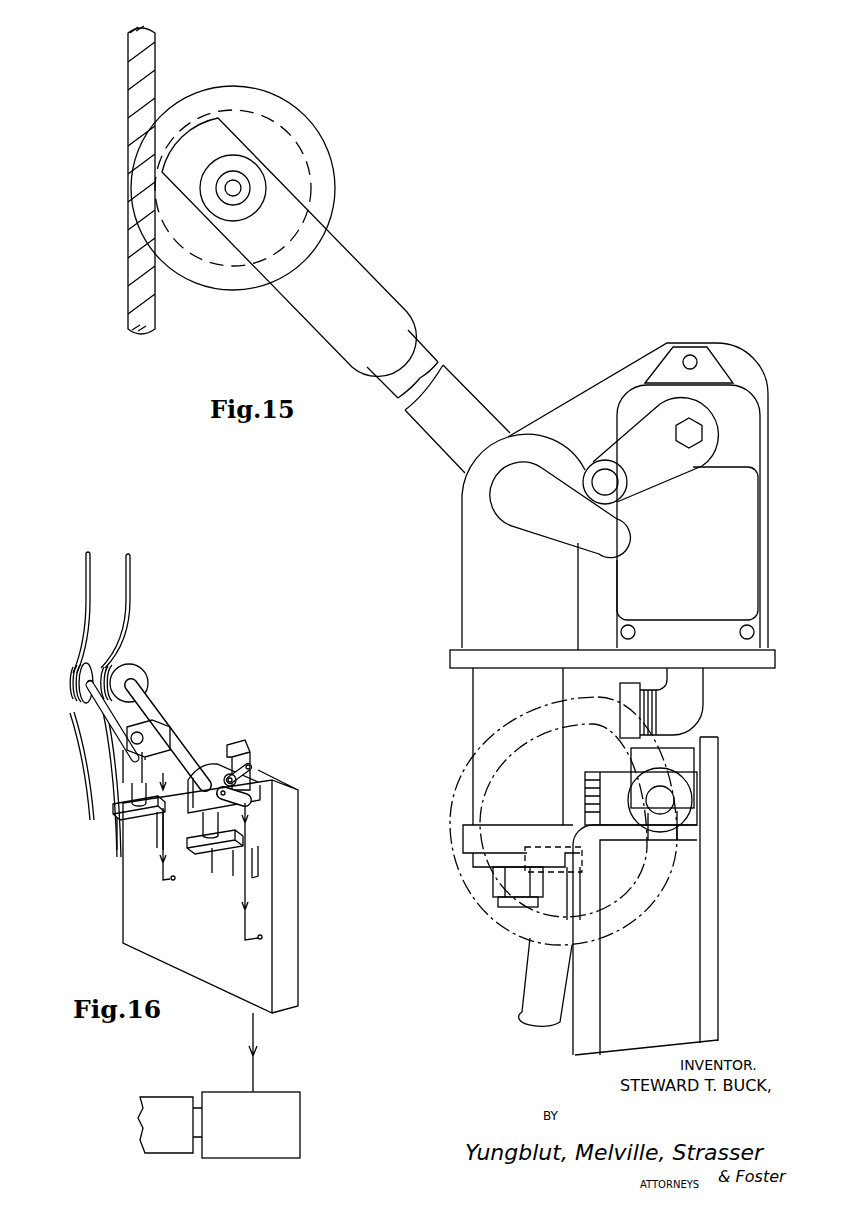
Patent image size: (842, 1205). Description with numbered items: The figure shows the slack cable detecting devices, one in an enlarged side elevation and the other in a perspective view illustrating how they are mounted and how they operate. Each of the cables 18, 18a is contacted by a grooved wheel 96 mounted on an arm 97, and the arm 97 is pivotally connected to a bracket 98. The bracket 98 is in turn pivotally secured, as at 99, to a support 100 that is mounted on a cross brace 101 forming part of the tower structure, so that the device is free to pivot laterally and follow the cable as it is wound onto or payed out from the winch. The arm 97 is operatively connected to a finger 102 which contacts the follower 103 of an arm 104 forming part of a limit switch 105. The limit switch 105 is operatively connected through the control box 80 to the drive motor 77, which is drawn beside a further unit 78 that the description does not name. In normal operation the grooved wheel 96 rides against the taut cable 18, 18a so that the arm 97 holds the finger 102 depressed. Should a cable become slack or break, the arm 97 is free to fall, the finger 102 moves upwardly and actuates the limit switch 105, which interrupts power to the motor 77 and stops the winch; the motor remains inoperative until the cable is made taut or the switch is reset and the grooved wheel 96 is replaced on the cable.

In FIG. 15, the cable 18 is at (150, 56).
In FIG. 16, the cable 18 is at (86, 578).
In FIG. 16, the cable 18a is at (130, 578).
In FIG. 15, the grooved wheel 96 is at (278, 110).
In FIG. 16, the grooved wheel 96 is at (135, 678).
In FIG. 15, the arm 97 is at (370, 292).
In FIG. 16, the arm 97 is at (185, 752).
In FIG. 15, the bracket 98 is at (633, 368).
In FIG. 16, the bracket 98 is at (232, 750).
In FIG. 15, the pivot 99 is at (485, 712).
In FIG. 16, the pivot 99 is at (133, 790).
In FIG. 15, the support 100 is at (473, 843).
In FIG. 16, the support 100 is at (147, 828).
In FIG. 15, the cross brace 101 is at (713, 877).
In FIG. 16, the cross brace 101 is at (290, 845).
In FIG. 15, the finger 102 is at (544, 520).
In FIG. 16, the finger 102 is at (250, 790).
In FIG. 15, the follower 103 is at (595, 462).
In FIG. 16, the follower 103 is at (228, 773).
In FIG. 15, the arm 104 is at (656, 470).
In FIG. 16, the arm 104 is at (250, 768).
In FIG. 15, the limit switch 105 is at (750, 522).
In FIG. 16, the limit switch 105 is at (248, 752).
In FIG. 16, the control box 80 is at (292, 895).
In FIG. 16, the motor 77 is at (287, 1117).
In FIG. 16, the unit 78 is at (163, 1107).